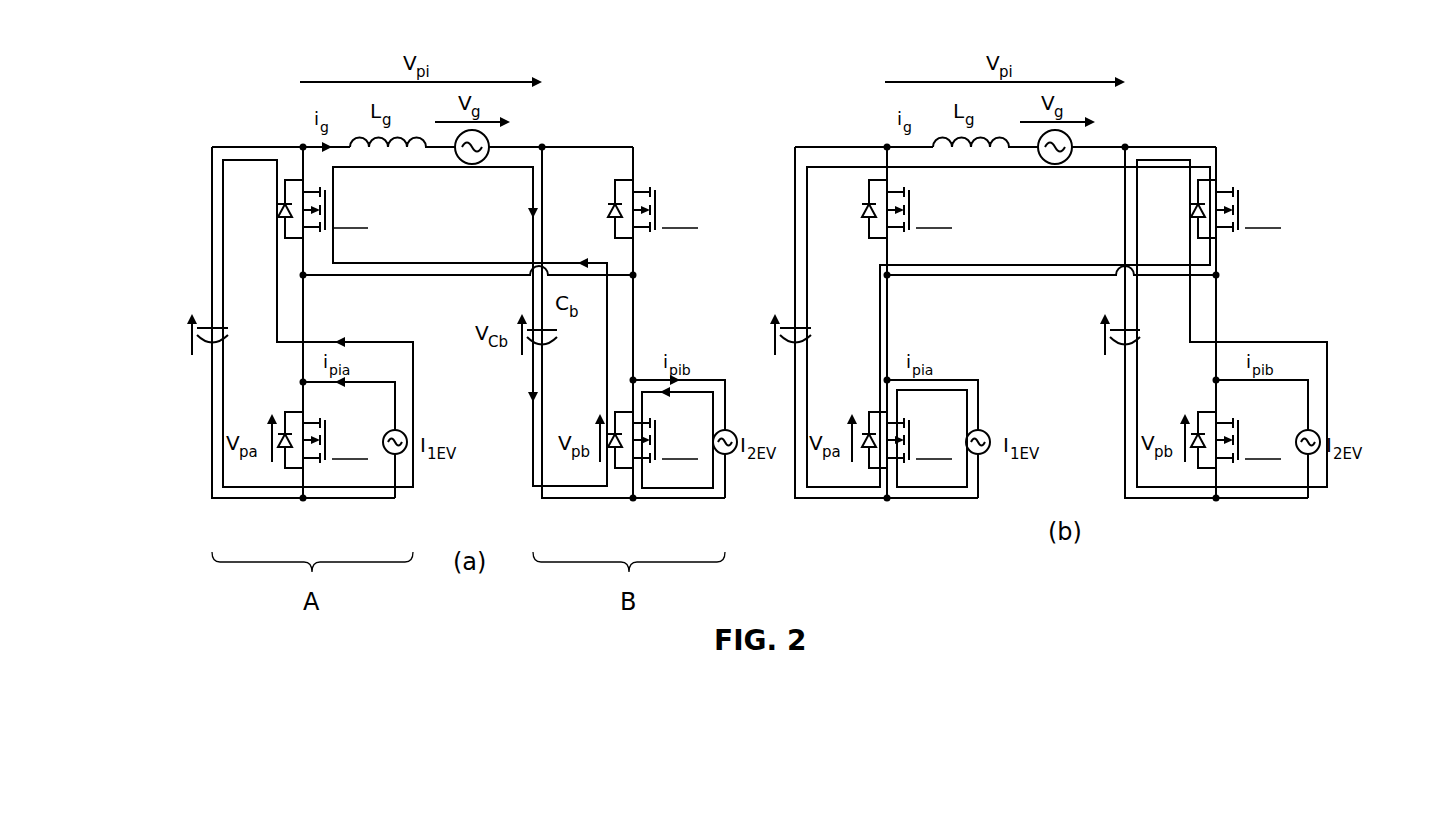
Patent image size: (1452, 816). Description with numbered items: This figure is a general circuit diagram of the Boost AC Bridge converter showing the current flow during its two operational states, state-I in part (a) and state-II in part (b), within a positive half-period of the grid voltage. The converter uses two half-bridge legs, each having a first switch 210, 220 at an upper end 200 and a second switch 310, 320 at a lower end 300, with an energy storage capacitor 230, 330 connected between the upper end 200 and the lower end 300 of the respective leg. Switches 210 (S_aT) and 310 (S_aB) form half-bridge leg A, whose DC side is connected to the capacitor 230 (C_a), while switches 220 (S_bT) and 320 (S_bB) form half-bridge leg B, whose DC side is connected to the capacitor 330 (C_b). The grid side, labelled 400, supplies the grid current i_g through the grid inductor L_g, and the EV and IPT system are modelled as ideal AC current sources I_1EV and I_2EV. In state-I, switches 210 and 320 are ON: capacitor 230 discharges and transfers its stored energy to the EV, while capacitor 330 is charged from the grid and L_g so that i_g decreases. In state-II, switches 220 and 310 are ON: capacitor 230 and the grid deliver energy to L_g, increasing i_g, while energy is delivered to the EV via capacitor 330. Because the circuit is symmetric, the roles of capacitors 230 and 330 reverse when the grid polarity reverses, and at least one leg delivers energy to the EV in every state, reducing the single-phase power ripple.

The upper end 200 is at (137, 147).
The lower end 300 is at (137, 340).
The grid-side AC input 400 is at (542, 45).
The first switch 210 is at (291, 170).
The first switch 220 is at (652, 152).
The capacitor 230 is at (229, 309).
The capacitor 330 is at (1124, 286).
The second switch 310 is at (289, 485).
The second switch 320 is at (616, 491).